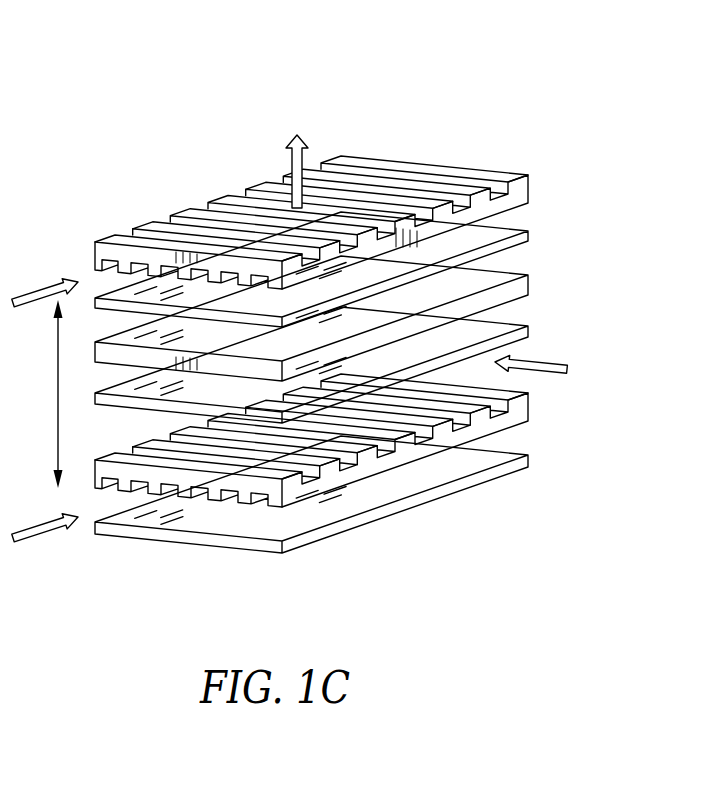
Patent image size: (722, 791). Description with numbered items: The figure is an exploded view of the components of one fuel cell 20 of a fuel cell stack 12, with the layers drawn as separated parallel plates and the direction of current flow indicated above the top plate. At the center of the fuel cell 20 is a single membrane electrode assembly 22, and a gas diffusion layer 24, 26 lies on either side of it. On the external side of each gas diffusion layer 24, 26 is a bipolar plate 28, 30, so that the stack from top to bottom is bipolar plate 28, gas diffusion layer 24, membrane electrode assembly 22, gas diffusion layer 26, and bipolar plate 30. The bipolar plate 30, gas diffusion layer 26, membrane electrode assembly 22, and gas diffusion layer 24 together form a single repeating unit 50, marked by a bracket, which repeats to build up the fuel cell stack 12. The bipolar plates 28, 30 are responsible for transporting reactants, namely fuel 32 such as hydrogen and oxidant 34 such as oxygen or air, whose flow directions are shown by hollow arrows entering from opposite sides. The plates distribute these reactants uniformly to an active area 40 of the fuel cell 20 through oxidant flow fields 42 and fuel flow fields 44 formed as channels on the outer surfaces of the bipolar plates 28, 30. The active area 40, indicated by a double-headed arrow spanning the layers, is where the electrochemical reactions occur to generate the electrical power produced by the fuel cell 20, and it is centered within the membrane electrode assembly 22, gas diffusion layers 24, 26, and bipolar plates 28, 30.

The fuel cell stack 12 is at (348, 327).
The fuel cell 20 is at (139, 158).
The bipolar plate 28 is at (358, 323).
The gas diffusion layer 24 is at (550, 234).
The membrane electrode assembly 22 is at (550, 281).
The gas diffusion layer 26 is at (550, 328).
The bipolar plate 30 is at (358, 440).
The single repeating unit 50 is at (391, 399).
The fuel flow fields 44 is at (428, 150).
The oxidant flow fields 42 is at (133, 506).
The fuel 32 is at (543, 362).
The oxidant 34 is at (33, 302).
The active area 40 is at (52, 406).